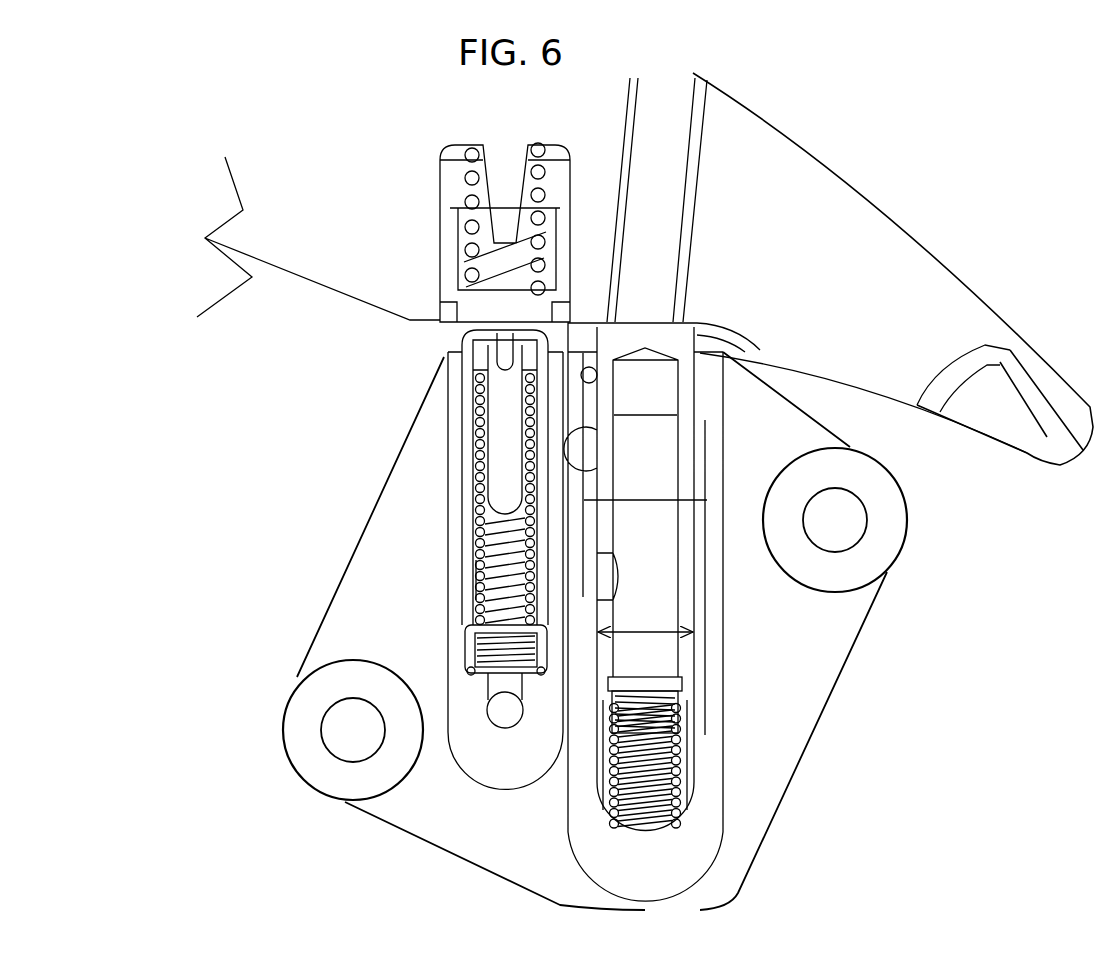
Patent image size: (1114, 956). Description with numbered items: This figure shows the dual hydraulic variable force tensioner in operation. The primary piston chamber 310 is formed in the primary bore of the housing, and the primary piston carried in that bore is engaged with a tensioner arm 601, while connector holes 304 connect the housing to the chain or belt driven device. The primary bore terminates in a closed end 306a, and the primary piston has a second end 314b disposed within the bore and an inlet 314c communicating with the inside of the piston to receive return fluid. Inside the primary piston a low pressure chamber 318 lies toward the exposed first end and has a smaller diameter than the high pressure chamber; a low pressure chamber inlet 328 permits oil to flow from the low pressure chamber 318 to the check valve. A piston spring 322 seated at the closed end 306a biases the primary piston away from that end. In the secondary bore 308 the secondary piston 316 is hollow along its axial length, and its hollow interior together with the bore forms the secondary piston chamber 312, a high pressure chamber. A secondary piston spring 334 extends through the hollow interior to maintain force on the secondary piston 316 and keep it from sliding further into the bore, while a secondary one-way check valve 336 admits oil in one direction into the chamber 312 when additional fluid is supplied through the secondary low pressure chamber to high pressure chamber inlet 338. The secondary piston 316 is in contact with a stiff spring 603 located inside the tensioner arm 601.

The tensioner arm 601 is at (940, 240).
The stiff spring 603 is at (440, 205).
The secondary piston chamber 312 is at (474, 432).
The secondary piston 316 is at (468, 467).
The secondary bore 308 is at (546, 535).
The secondary piston spring 334 is at (478, 582).
The secondary one-way check valve 336 is at (468, 645).
The secondary low pressure chamber to high pressure chamber inlet 338 is at (490, 715).
The closed end 306a is at (586, 827).
The low pressure chamber 318 is at (663, 373).
The connector holes 304 is at (867, 528).
The inlet 314c is at (624, 583).
The primary piston chamber 310 is at (688, 618).
The low pressure chamber inlet 328 is at (665, 684).
The piston spring 322 is at (678, 773).
The second end 314b is at (690, 797).